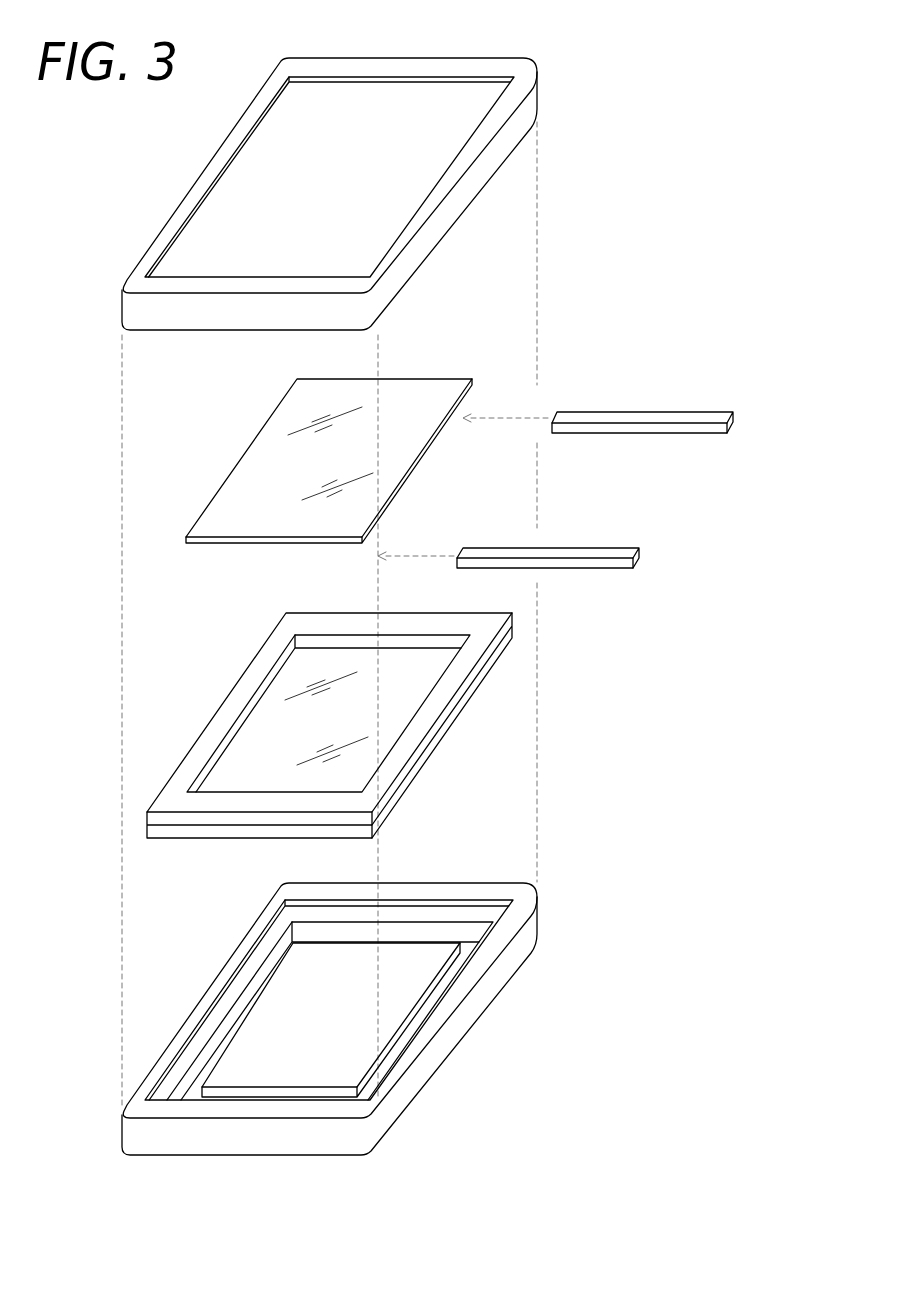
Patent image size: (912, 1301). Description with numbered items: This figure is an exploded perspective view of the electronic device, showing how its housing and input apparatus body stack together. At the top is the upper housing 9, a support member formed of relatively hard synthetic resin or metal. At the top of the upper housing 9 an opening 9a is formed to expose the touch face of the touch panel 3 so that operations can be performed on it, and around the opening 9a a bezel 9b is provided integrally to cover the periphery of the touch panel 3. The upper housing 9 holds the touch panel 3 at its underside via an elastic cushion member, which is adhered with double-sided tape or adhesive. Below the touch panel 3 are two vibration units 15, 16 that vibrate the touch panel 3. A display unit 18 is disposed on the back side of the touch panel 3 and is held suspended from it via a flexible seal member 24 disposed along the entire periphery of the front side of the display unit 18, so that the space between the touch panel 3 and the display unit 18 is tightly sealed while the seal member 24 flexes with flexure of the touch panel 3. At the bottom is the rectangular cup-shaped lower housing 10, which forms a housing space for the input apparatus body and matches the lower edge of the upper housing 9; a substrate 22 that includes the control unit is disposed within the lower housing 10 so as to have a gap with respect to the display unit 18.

The touch panel 3 is at (412, 388).
The upper housing 9 is at (365, 170).
The opening 9a is at (340, 193).
The bezel 9b is at (443, 60).
The lower housing 10 is at (360, 1019).
The vibration unit 15 is at (598, 552).
The vibration unit 16 is at (653, 415).
The display unit 18 is at (277, 743).
The substrate 22 is at (308, 1000).
The seal member 24 is at (329, 724).